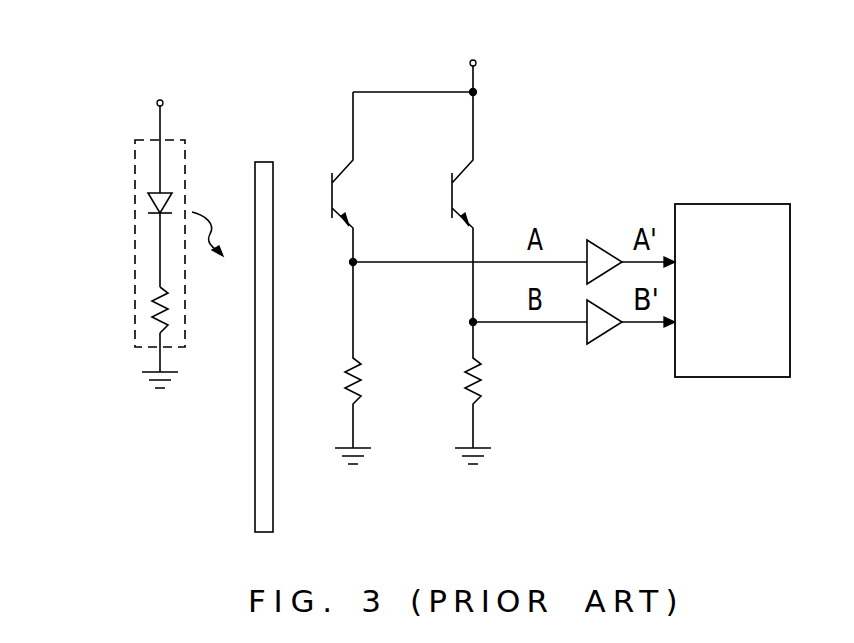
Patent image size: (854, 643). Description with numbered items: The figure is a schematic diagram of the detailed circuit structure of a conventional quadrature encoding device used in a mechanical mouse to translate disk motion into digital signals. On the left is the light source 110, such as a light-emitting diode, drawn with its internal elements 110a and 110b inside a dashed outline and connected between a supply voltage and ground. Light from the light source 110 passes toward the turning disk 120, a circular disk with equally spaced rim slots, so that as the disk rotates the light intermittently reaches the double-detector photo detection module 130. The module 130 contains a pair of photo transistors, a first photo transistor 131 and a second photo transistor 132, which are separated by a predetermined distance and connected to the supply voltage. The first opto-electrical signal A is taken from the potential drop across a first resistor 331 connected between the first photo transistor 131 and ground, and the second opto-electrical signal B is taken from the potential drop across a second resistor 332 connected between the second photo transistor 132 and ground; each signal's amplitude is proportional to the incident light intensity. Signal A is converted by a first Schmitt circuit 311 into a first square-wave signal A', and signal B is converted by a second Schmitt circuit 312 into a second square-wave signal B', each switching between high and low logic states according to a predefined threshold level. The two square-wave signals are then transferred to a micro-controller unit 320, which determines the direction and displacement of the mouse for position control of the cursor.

The light source 110 is at (135, 140).
The light emitting diode 110a is at (156, 207).
The resistor 110b is at (160, 312).
The turning disk 120 is at (255, 490).
The double-detector photo detection module 130 is at (332, 67).
The first photo transistor 131 is at (344, 170).
The second photo transistor 132 is at (468, 189).
The first Schmitt circuit 311 is at (601, 240).
The second Schmitt circuit 312 is at (604, 342).
The micro-controller unit 320 is at (733, 204).
The first resistor 331 is at (370, 390).
The second resistor 332 is at (492, 380).